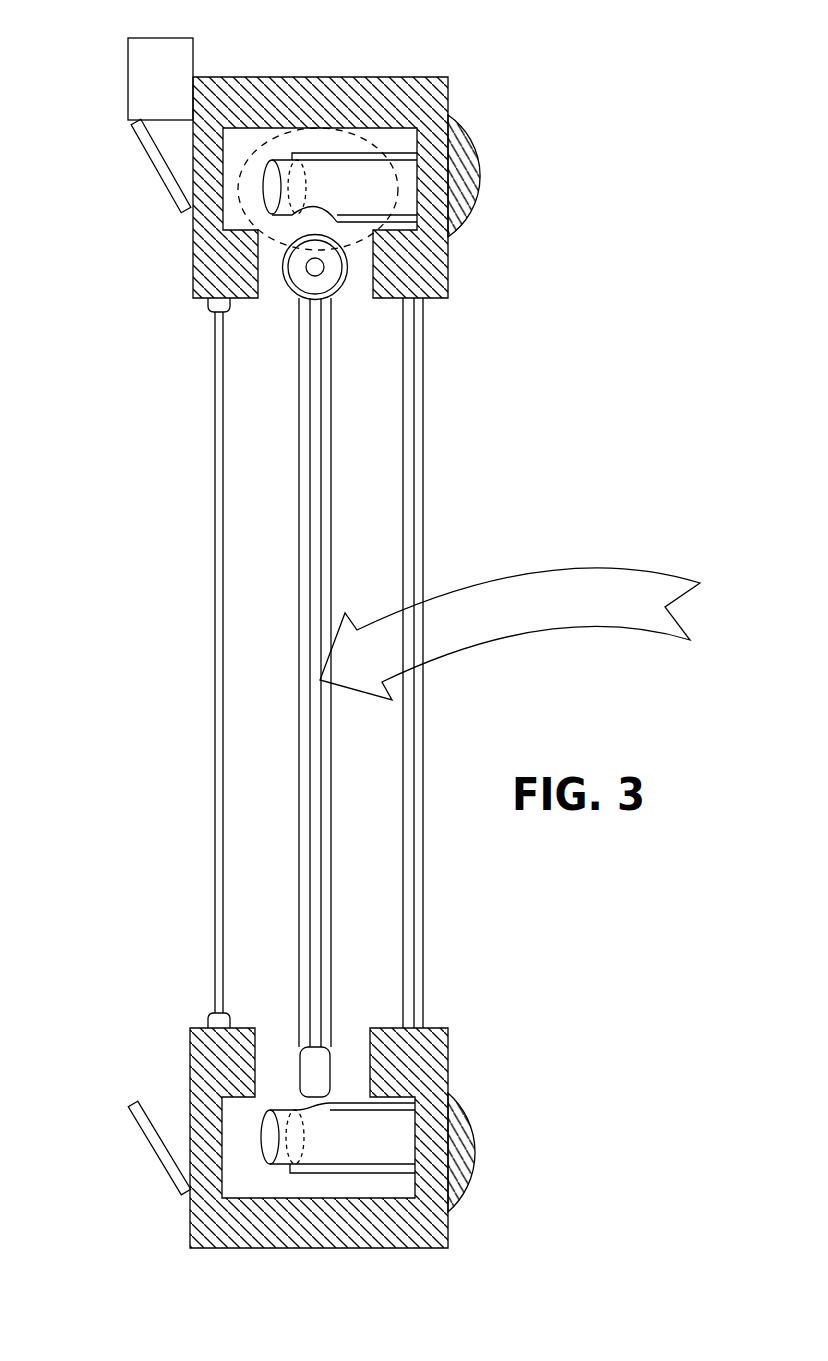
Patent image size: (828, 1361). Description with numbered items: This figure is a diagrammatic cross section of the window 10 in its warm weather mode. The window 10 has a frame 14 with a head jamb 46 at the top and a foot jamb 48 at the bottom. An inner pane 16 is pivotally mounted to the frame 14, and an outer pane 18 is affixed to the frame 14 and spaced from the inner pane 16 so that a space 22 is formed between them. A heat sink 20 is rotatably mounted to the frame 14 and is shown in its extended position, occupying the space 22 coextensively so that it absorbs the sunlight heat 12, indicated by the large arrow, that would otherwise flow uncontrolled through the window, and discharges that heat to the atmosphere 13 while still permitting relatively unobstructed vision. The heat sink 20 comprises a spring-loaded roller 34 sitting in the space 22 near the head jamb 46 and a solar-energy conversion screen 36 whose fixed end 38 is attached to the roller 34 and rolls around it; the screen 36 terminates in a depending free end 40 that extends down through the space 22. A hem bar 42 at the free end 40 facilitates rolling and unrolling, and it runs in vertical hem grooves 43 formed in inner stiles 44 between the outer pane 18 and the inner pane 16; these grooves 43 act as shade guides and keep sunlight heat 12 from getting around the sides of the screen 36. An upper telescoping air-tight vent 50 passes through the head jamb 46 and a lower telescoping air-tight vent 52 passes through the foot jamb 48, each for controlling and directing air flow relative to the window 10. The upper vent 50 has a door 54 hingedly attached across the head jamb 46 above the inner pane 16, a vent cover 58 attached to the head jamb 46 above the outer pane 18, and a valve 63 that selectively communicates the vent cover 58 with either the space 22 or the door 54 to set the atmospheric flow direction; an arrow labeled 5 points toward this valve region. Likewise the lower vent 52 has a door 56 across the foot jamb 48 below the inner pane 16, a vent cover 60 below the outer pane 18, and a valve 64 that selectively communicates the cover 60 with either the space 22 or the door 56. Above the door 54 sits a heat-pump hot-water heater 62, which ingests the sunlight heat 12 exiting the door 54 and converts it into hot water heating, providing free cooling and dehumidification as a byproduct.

The section indicator 5 is at (240, 207).
The window 10 is at (515, 292).
The sunlight heat 12 is at (525, 620).
The atmosphere 13 is at (506, 930).
The frame 14 is at (343, 1250).
The inner pane 16 is at (215, 512).
The outer pane 18 is at (423, 452).
The heat sink 20 is at (310, 570).
The space 22 is at (277, 886).
The spring-loaded roller 34 is at (327, 286).
The solar-energy conversion screen 36 is at (313, 405).
The fixed end 38 is at (295, 296).
The depending free end 40 is at (310, 1010).
The hem bar 42 is at (333, 1050).
The vertical hem grooves 43 is at (328, 462).
The inner stiles 44 is at (342, 327).
The head jamb 46 is at (232, 92).
The foot jamb 48 is at (210, 1247).
The upper telescoping air-tight vent 50 is at (318, 137).
The lower telescoping air-tight vent 52 is at (298, 1187).
The door 54 is at (163, 178).
The door 56 is at (143, 1143).
The vent cover 58 is at (470, 168).
The vent cover 60 is at (473, 1143).
The heat-pump hot-water heater 62 is at (178, 84).
The valve 63 is at (373, 170).
The valve 64 is at (360, 1173).